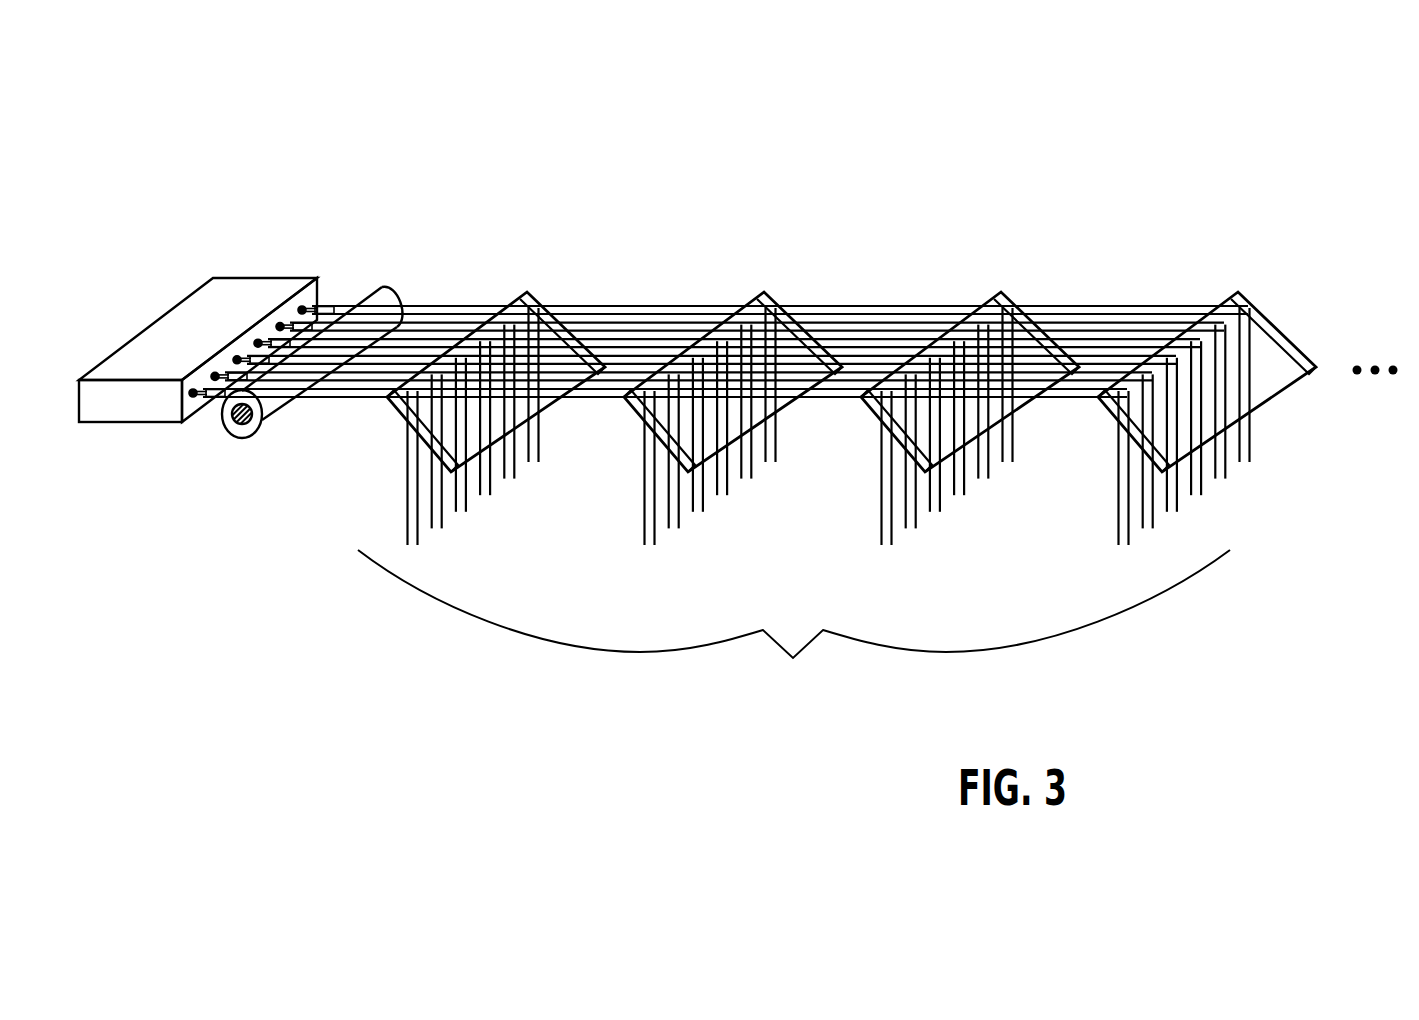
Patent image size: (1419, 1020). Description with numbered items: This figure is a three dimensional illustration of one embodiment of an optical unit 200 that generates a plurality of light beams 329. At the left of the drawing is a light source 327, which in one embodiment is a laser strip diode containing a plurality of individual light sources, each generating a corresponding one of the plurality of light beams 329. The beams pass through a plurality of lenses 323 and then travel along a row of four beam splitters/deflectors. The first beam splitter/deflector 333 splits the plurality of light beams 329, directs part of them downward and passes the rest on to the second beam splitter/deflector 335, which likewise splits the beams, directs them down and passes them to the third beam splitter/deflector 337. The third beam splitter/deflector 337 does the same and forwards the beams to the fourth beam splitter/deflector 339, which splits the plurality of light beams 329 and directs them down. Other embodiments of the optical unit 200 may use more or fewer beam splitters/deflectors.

The optical unit 200 is at (1218, 113).
The light source 327 is at (188, 300).
The plurality of lenses 323 is at (380, 286).
The first beam splitter/deflector 333 is at (520, 288).
The second beam splitter/deflector 335 is at (757, 288).
The third beam splitter/deflector 337 is at (1005, 288).
The fourth beam splitter/deflector 339 is at (1242, 288).
The plurality of light beams 329 is at (794, 622).